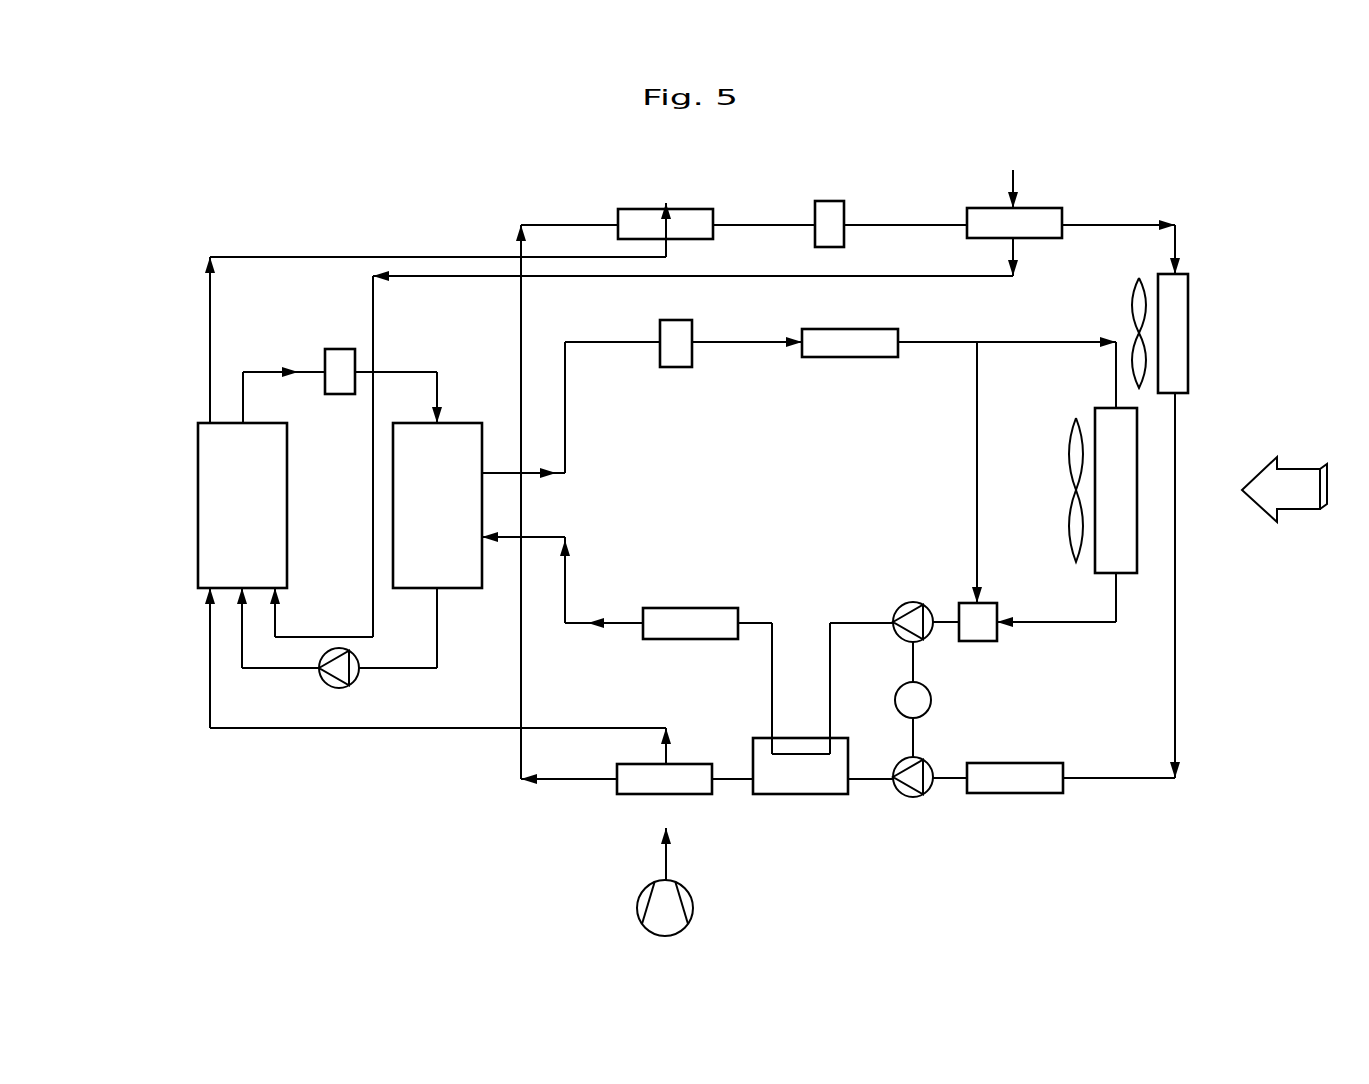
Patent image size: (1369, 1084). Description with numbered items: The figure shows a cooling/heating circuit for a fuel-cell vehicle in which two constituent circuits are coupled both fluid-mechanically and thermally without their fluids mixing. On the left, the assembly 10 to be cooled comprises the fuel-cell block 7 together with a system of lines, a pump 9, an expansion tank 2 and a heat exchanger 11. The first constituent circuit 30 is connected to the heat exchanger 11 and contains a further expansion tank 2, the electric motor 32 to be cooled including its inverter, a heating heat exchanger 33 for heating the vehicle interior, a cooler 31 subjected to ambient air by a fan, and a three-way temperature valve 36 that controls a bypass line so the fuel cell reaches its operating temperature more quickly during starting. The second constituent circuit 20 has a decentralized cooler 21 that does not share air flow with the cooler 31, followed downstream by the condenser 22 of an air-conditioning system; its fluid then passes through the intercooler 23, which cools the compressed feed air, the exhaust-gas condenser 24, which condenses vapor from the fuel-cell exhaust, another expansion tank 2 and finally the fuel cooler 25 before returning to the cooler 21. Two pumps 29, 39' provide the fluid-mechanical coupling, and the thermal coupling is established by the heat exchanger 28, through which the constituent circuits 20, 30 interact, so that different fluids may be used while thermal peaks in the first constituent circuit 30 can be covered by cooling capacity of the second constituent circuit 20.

The expansion tank 2 is at (339, 394).
The fuel cell stack 7 is at (203, 501).
The pump 9 is at (355, 677).
The assembly 10 is at (304, 348).
The heat exchanger 11 is at (470, 582).
The second constituent circuit 20 is at (1110, 198).
The decentralized cooler 21 is at (1185, 330).
The condenser 22 is at (1017, 789).
The intercooler 23 is at (631, 789).
The exhaust-gas condenser 24 is at (693, 211).
The fuel cooler 25 is at (1045, 208).
The heat exchanger 28 is at (803, 789).
The pump 29 is at (918, 797).
The first constituent circuit 30 is at (752, 372).
The cooler 31 is at (1132, 533).
The electric motor 32 is at (690, 612).
The heating heat exchanger 33 is at (852, 352).
The three-way temperature valve 36 is at (980, 638).
The pump 39' is at (926, 618).